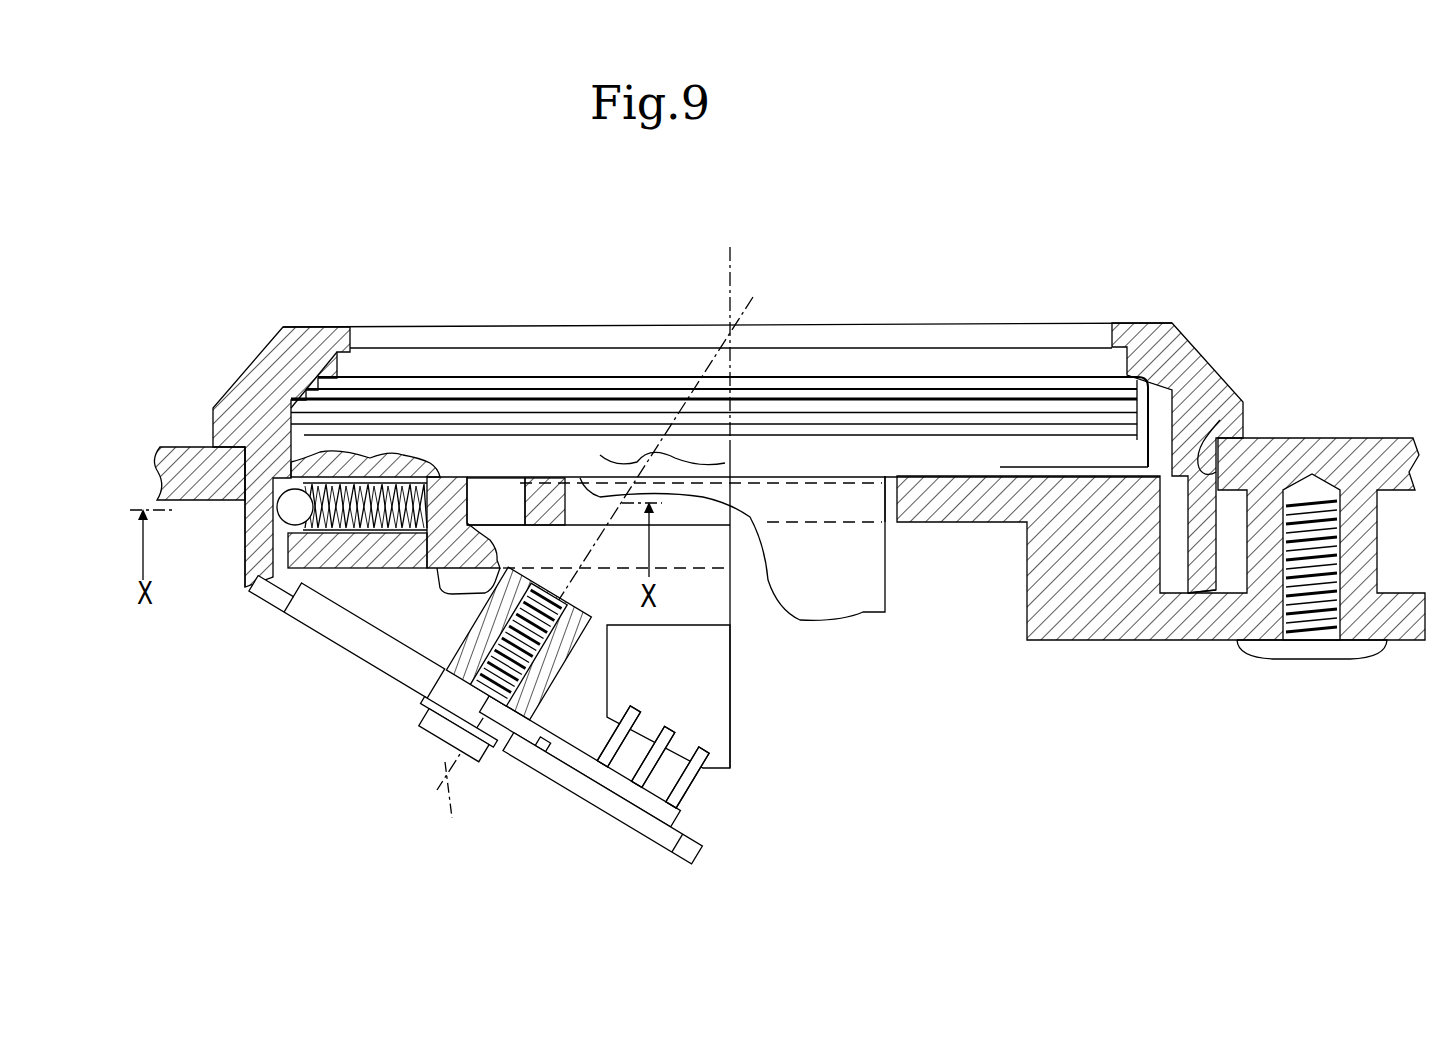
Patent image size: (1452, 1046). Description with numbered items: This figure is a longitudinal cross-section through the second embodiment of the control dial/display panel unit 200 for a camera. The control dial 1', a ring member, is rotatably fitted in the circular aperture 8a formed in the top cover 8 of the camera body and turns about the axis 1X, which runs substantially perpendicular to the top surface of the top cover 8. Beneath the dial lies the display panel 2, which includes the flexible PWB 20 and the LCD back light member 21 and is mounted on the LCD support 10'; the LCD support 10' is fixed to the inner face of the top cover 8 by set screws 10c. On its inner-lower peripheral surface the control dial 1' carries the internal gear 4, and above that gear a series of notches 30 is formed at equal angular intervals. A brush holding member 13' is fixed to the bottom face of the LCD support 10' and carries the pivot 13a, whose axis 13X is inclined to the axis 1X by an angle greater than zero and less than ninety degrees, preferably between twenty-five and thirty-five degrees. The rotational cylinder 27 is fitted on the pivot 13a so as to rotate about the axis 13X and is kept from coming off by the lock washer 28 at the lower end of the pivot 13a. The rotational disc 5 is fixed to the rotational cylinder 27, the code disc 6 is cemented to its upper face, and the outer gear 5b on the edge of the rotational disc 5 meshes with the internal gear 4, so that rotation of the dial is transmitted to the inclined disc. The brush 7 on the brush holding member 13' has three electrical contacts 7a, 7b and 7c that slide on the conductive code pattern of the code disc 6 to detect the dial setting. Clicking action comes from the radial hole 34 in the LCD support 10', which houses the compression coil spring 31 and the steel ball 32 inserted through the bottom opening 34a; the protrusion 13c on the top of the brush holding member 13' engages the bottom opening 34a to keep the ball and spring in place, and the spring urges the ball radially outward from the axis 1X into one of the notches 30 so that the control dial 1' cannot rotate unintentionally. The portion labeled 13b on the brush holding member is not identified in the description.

The control dial/display panel unit 200 is at (566, 276).
The control dial 1' is at (728, 439).
The display panel 2 is at (650, 388).
The axis of the control dial 1X is at (726, 281).
The LCD back light member 21 is at (722, 450).
The axis of the pivot 13X is at (587, 577).
The protrusion 13c is at (470, 475).
The brush holding member 13' is at (674, 592).
The lower portion of holder 13b is at (733, 675).
The pivot 13a is at (480, 732).
The flexible PWB 20 is at (858, 593).
The notches 30 is at (242, 467).
The top cover 8 is at (207, 490).
The circular aperture 8a is at (1220, 420).
The LCD support 10' is at (1155, 568).
The set screws 10c is at (1310, 650).
The internal gear 4 is at (1196, 588).
The bottom opening 34a is at (433, 565).
The compression coil spring 31 is at (387, 537).
The radial hole 34 is at (363, 533).
The steel ball 32 is at (278, 530).
The rotational disc 5 is at (322, 628).
The outer gear 5b is at (255, 593).
The code disc 6 is at (678, 818).
The rotational cylinder 27 is at (417, 722).
The lock washer 28 is at (425, 727).
The brush 7 is at (635, 709).
The electrical contact 7a is at (603, 735).
The electrical contact 7b is at (668, 762).
The electrical contact 7c is at (685, 797).